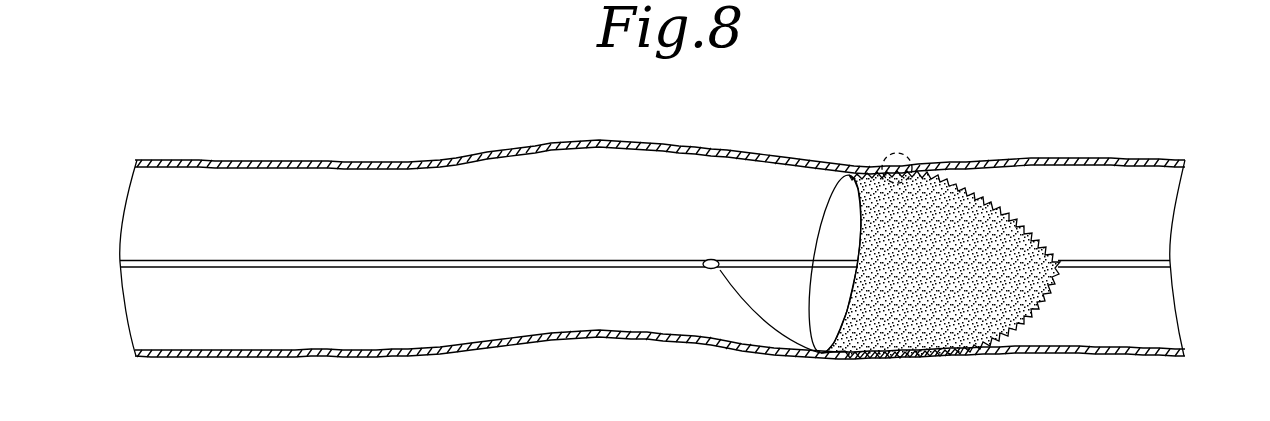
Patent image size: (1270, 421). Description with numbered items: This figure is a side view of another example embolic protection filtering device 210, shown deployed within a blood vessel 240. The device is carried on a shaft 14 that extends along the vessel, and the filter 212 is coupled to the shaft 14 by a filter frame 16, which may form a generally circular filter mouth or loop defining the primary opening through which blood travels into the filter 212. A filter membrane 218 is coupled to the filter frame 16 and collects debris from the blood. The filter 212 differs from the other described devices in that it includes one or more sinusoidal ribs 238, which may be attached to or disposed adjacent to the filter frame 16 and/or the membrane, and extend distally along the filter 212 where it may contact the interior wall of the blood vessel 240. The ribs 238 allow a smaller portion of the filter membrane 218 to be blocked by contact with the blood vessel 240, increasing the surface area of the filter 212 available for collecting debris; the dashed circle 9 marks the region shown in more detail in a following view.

The shaft 14 is at (340, 260).
The filter frame 16 is at (823, 243).
The filtering device 210 is at (667, 228).
The filter 212 is at (803, 193).
The filter membrane 218 is at (963, 244).
The sinusoidal ribs 238 is at (982, 185).
The blood vessel 240 is at (1110, 162).
The detail region shown in FIG. 9 is at (908, 157).